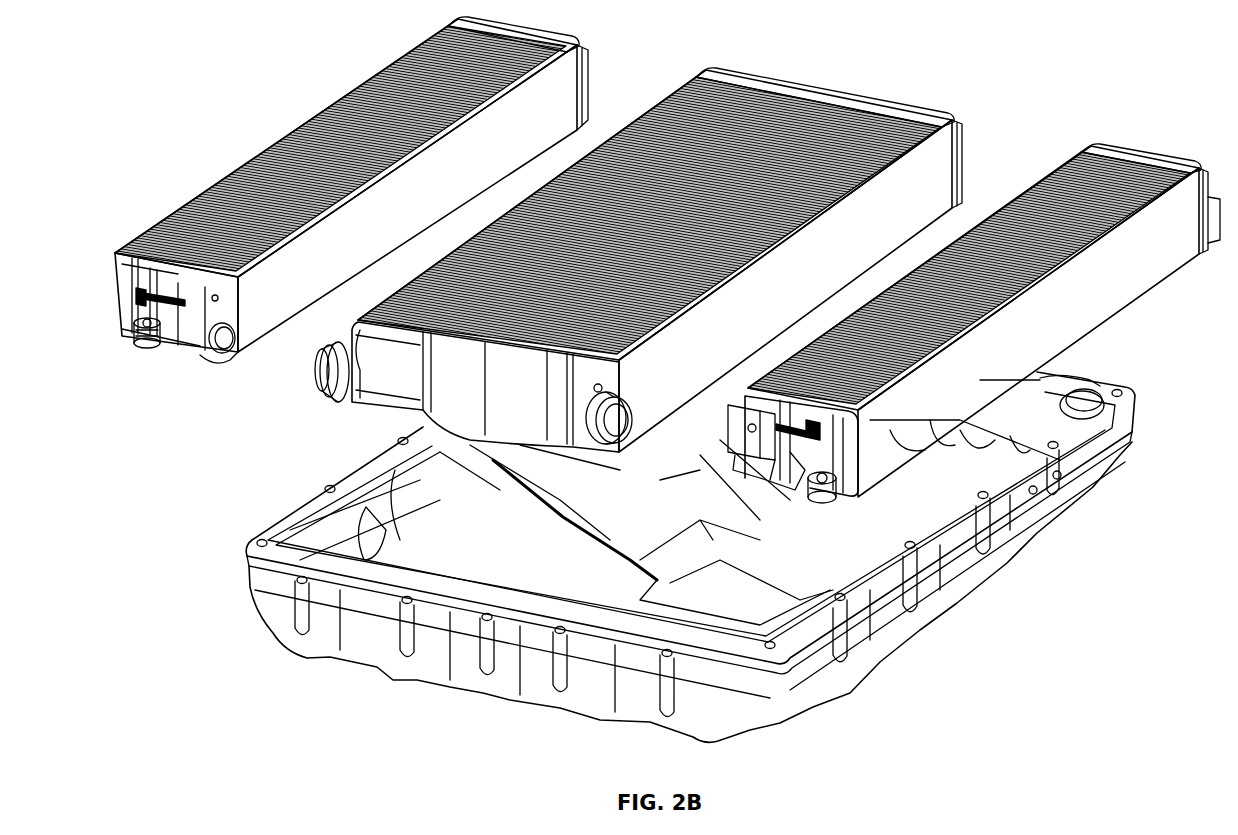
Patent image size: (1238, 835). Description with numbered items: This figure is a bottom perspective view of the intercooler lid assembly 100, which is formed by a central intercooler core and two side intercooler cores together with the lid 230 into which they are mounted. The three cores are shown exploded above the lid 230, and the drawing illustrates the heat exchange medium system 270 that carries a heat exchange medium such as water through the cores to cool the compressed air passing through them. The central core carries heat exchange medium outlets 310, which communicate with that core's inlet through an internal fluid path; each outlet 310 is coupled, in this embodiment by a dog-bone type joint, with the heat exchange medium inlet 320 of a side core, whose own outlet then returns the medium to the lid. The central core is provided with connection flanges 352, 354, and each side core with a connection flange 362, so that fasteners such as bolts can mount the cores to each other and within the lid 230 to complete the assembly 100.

The intercooler lid assembly 100 is at (172, 122).
The lid 230 is at (246, 560).
The heat exchange medium system 270 is at (118, 320).
The heat exchange medium outlets 310 is at (326, 398).
The heat exchange medium inlet 320 is at (232, 346).
The connection flange 352 is at (356, 324).
The connection flange 354 is at (572, 398).
The connection flange 362 is at (222, 290).